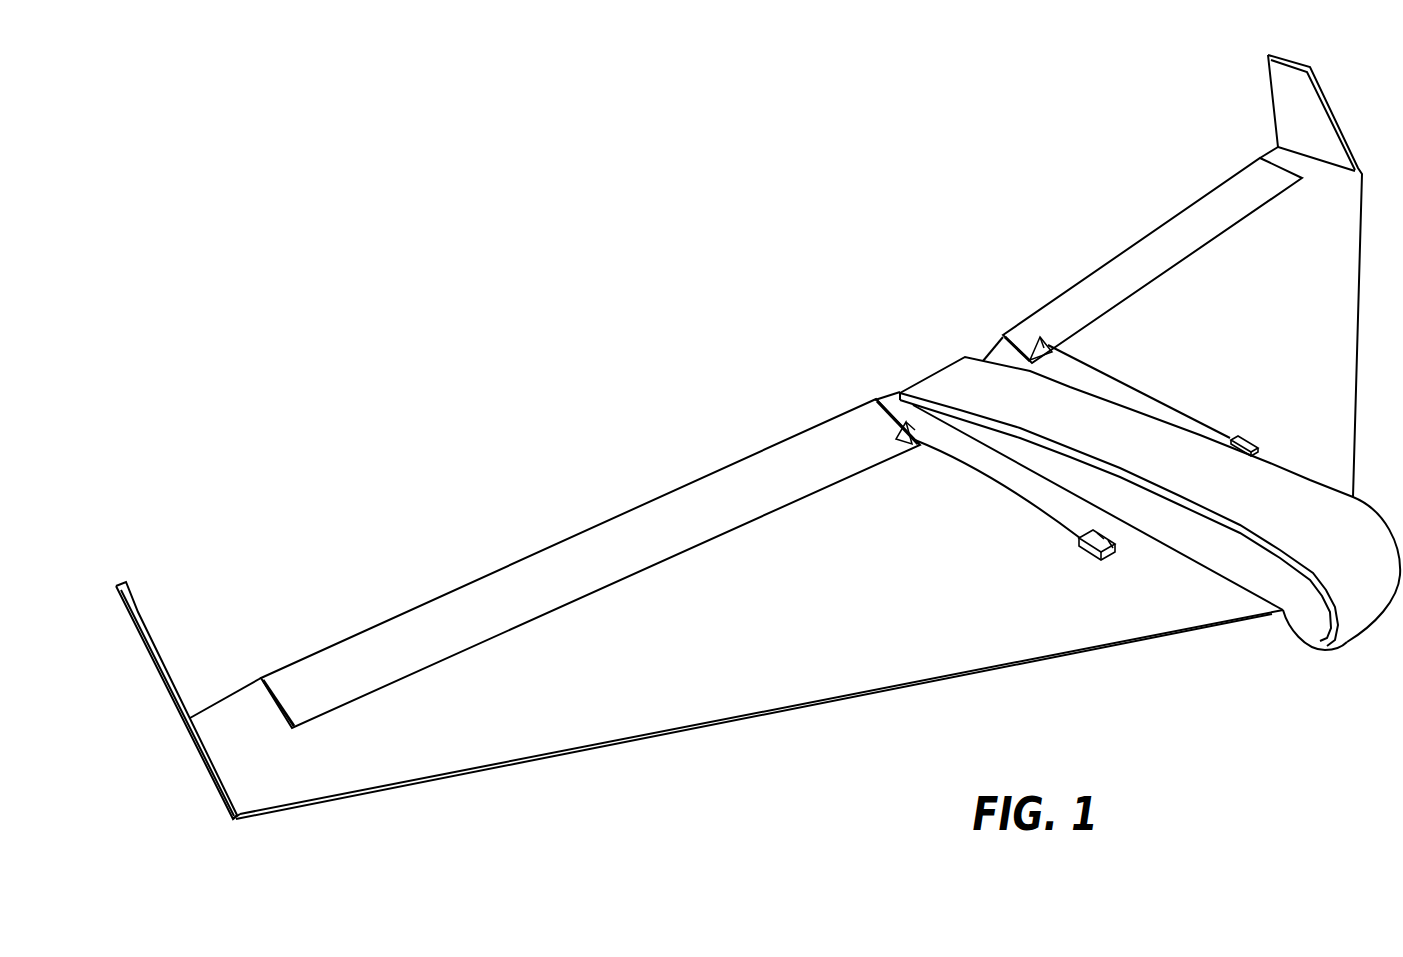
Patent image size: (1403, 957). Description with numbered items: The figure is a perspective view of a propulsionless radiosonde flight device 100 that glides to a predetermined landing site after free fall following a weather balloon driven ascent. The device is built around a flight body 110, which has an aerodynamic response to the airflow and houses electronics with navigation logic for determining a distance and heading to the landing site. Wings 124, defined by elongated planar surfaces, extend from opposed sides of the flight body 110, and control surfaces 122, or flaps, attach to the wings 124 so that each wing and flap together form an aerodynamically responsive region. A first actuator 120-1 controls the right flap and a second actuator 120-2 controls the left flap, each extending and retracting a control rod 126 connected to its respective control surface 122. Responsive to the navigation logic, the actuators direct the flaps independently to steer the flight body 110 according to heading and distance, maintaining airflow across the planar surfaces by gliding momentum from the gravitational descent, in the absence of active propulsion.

The propulsionless flight device 100 is at (531, 382).
The flight body 110 is at (1290, 537).
The first actuator 120-1 is at (1087, 548).
The second actuator 120-2 is at (1240, 438).
The control surfaces 122 is at (403, 643).
The wings 124 is at (693, 660).
The control rods 126 is at (977, 473).